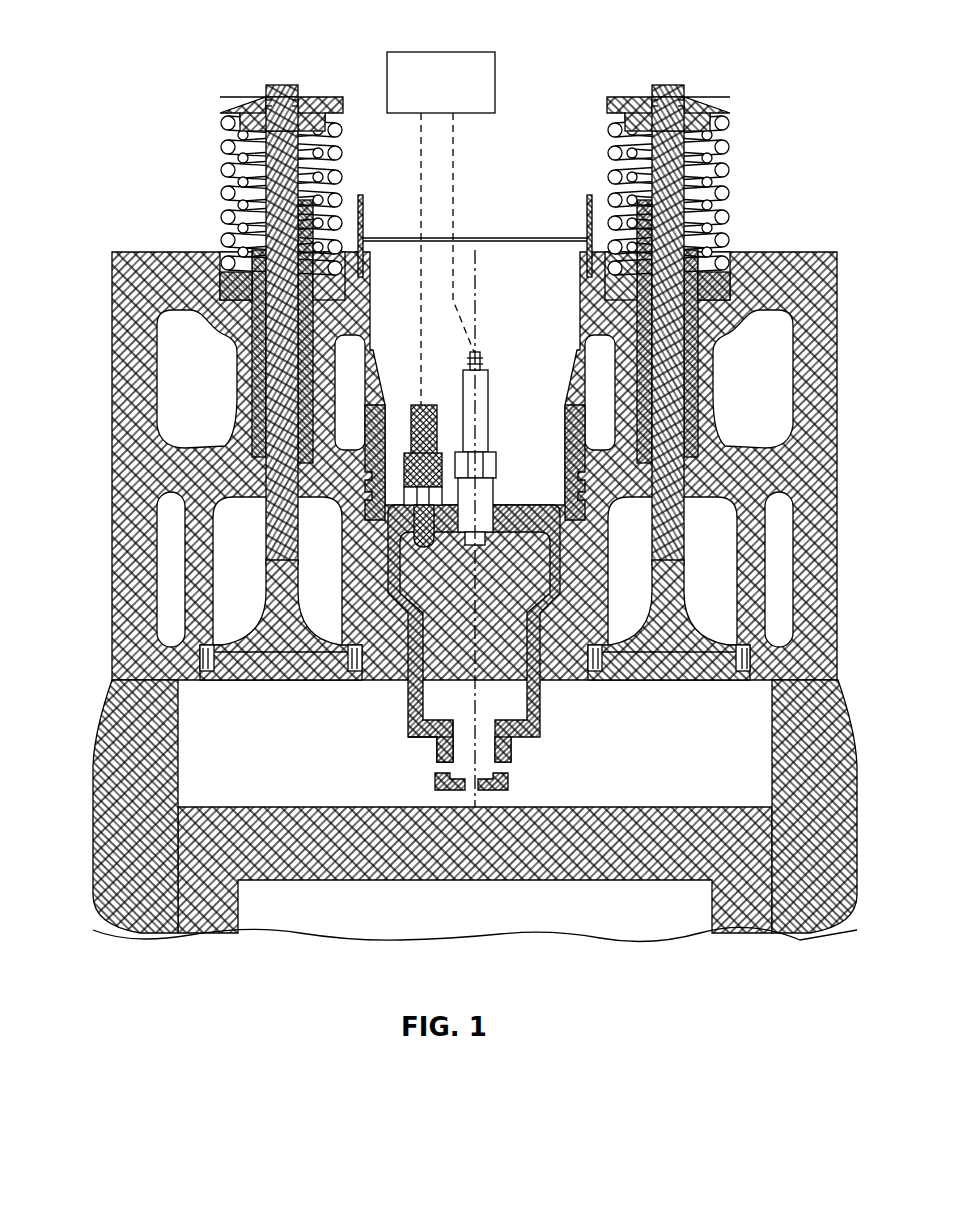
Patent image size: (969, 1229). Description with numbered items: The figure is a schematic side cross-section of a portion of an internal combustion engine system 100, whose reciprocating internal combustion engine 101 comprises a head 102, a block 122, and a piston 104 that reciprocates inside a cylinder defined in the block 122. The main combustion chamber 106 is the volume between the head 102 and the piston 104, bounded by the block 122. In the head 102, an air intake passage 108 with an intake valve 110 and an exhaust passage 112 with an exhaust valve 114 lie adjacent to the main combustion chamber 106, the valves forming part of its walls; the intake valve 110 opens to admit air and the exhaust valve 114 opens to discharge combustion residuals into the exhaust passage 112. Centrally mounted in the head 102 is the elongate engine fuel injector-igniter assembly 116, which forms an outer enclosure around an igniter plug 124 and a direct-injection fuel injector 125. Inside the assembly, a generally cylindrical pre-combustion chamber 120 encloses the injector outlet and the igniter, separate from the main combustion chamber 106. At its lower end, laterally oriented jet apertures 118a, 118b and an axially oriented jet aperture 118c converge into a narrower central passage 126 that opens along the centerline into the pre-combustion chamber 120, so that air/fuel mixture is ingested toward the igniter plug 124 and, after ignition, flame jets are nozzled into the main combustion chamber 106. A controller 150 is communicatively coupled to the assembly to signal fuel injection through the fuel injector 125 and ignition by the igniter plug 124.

The internal combustion engine system 100 is at (150, 59).
The internal combustion engine 101 is at (209, 252).
The head 102 is at (155, 251).
The piston 104 is at (300, 822).
The main combustion chamber 106 is at (688, 796).
The air intake passage 108 is at (226, 580).
The intake valve 110 is at (288, 656).
The exhaust passage 112 is at (690, 580).
The exhaust valve 114 is at (665, 656).
The engine fuel injector-igniter assembly 116 is at (490, 265).
The jet aperture 118a is at (438, 770).
The jet aperture 118b is at (508, 770).
The jet aperture 118c is at (470, 785).
The pre-combustion chamber 120 is at (424, 587).
The block 122 is at (146, 918).
The igniter plug 124 is at (483, 440).
The fuel injector 125 is at (412, 430).
The central passage 126 is at (460, 735).
The controller 150 is at (424, 94).